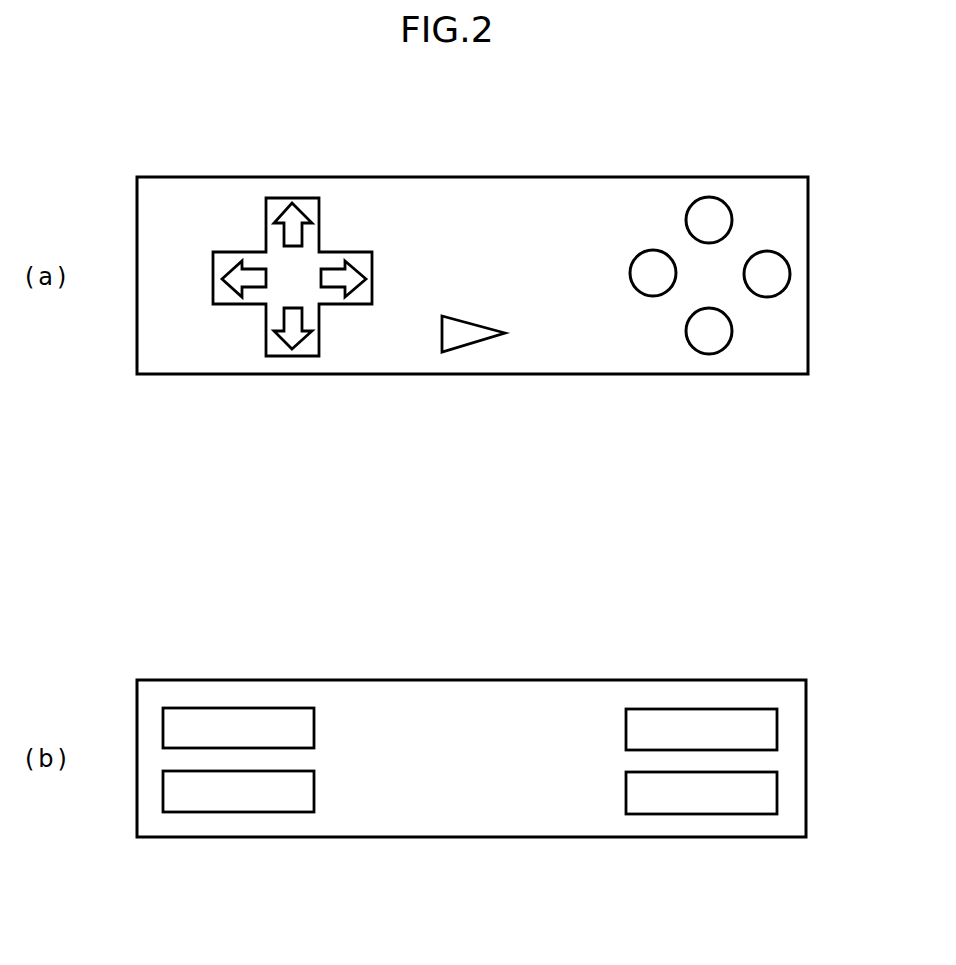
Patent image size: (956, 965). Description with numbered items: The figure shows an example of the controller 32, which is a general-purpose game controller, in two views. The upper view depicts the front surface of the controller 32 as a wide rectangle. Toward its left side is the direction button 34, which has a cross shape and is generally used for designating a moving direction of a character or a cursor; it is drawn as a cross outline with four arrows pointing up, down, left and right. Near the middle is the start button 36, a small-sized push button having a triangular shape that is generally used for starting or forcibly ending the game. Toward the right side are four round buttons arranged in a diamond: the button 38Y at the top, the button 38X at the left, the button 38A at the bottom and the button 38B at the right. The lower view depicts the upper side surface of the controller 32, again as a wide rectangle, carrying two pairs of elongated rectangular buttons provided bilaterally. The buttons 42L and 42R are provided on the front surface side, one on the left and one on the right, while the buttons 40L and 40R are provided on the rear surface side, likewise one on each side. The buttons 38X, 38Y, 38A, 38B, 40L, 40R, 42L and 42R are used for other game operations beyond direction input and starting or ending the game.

The controller 32 is at (197, 176).
The direction button 34 is at (322, 222).
The start button 36 is at (475, 342).
The button 38Y is at (686, 220).
The button 38X is at (630, 274).
The button 38A is at (686, 331).
The button 38B is at (790, 273).
The button 40L is at (238, 707).
The button 42L is at (242, 812).
The button 40R is at (702, 709).
The button 42R is at (707, 814).